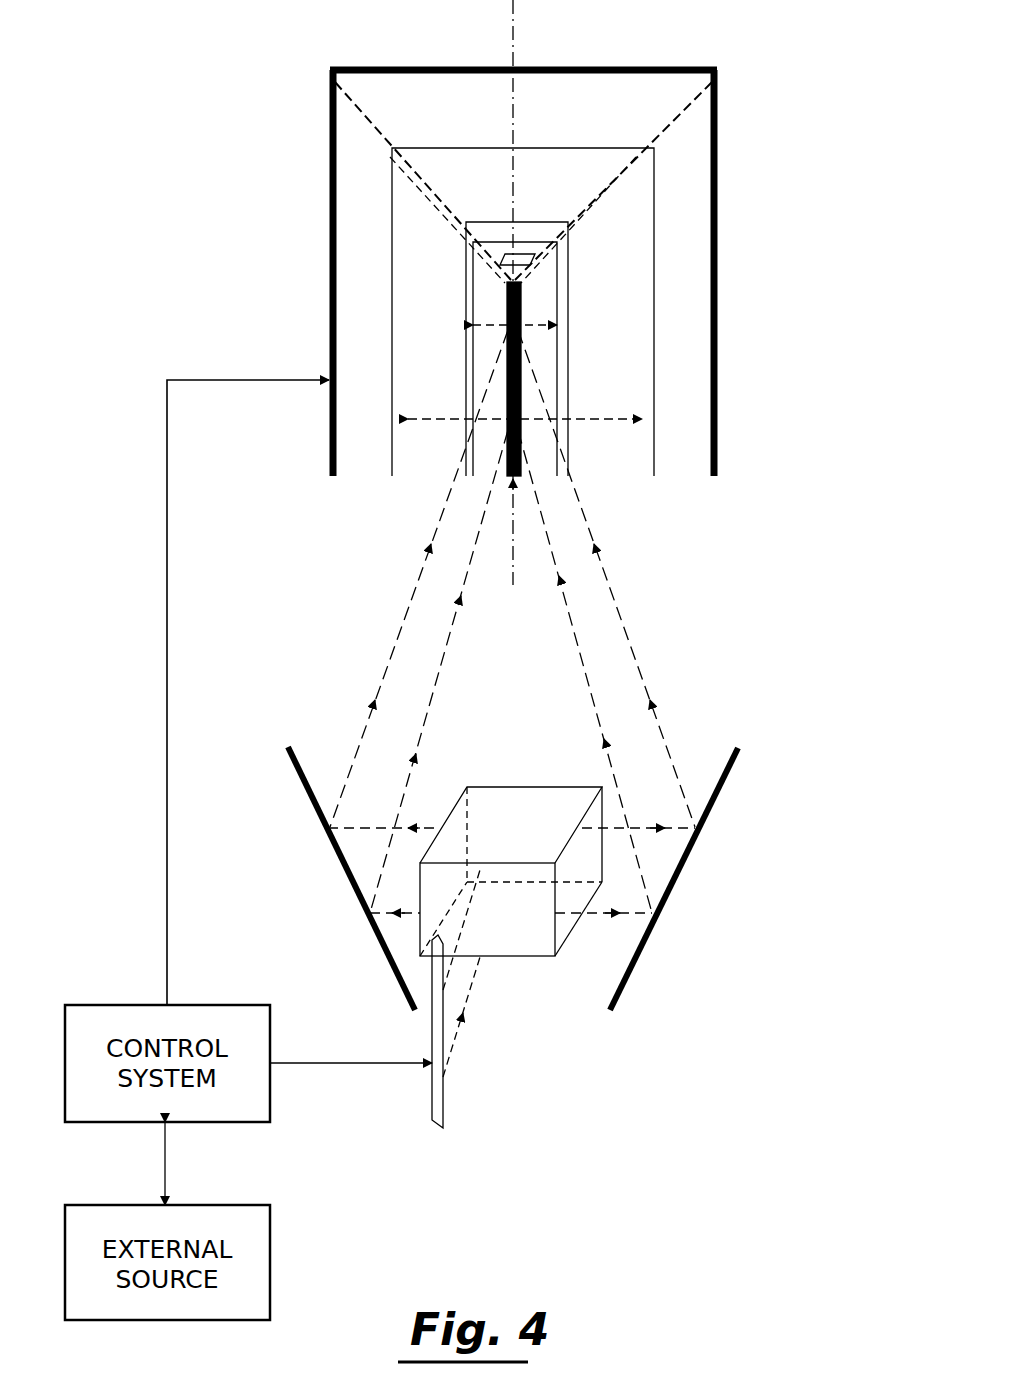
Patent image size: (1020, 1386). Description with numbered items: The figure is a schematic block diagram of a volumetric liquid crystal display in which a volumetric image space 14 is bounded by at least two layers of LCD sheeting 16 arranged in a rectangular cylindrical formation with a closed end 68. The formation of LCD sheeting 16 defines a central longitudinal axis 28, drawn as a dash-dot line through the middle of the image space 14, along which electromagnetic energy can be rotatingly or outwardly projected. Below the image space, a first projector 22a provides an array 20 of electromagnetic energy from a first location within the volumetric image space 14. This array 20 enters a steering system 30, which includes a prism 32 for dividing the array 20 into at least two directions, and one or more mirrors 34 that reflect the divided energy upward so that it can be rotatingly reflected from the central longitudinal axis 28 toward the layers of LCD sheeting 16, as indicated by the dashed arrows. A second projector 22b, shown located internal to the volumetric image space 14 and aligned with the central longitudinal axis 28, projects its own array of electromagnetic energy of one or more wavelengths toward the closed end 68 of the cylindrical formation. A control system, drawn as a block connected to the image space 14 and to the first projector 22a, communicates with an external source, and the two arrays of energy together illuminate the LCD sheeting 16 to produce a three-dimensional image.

The volumetric image space 14 is at (690, 259).
The LCD sheeting 16 is at (427, 147).
The array of electromagnetic energy 20 is at (378, 687).
The first projector 22a is at (445, 1100).
The second projector 22b is at (523, 250).
The central longitudinal axis 28 is at (512, 51).
The steering system 30 is at (525, 932).
The prism 32 is at (505, 958).
The mirrors 34 is at (298, 778).
The closed end 68 is at (535, 66).